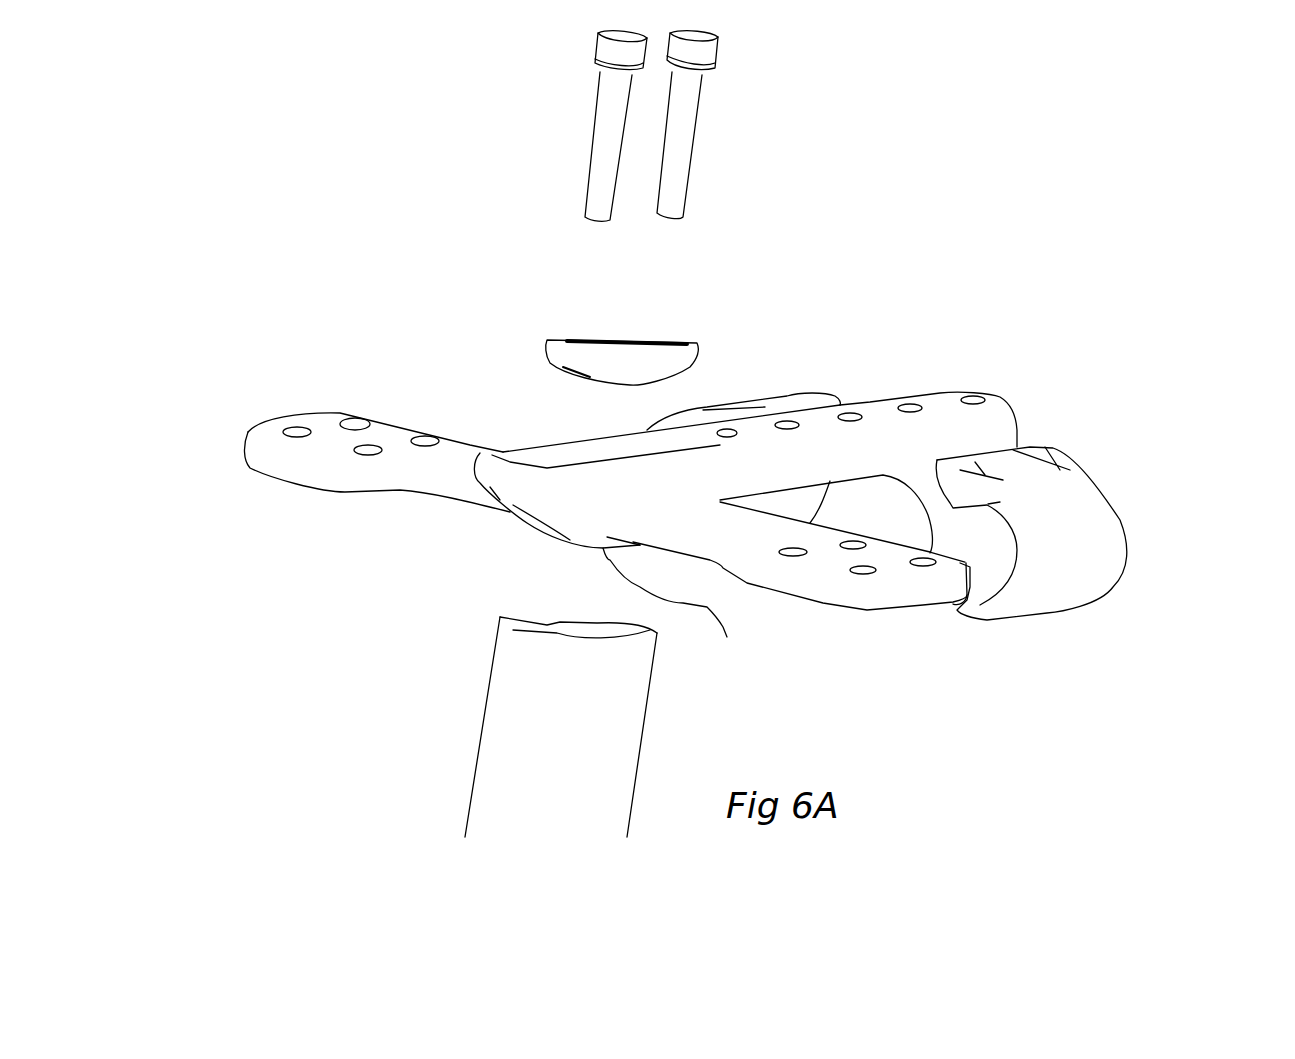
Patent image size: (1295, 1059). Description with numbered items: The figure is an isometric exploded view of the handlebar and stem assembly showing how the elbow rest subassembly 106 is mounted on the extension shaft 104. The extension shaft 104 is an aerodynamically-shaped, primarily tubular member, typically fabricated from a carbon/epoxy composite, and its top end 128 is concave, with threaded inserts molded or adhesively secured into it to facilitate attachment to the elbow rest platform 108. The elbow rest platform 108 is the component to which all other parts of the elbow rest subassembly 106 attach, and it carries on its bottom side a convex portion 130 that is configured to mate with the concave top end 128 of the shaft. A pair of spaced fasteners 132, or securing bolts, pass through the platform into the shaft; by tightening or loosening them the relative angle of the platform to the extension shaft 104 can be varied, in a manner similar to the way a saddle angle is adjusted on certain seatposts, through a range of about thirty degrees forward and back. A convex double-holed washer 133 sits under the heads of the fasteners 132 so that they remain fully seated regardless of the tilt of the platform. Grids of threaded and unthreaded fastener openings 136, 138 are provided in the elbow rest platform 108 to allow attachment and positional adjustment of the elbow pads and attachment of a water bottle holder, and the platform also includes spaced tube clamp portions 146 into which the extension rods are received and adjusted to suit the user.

The extension shaft 104 is at (523, 718).
The elbow rest subassembly 106 is at (257, 205).
The elbow rest platform 108 is at (883, 417).
The top end 128 is at (565, 625).
The convex portion 130 is at (680, 610).
The fasteners 132 is at (603, 152).
The convex double-holed washer 133 is at (687, 355).
The fastener openings 136 is at (298, 432).
The fastener openings 138 is at (982, 397).
The tube clamp portions 146 is at (1113, 563).